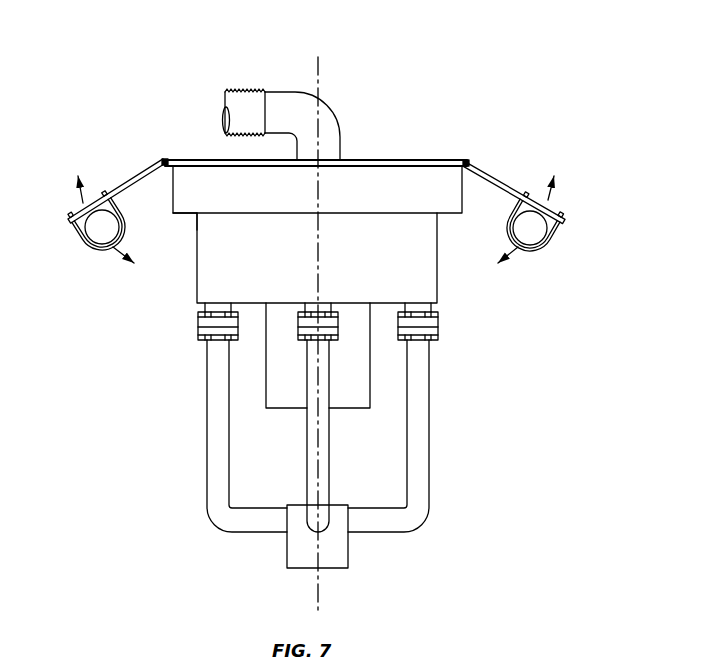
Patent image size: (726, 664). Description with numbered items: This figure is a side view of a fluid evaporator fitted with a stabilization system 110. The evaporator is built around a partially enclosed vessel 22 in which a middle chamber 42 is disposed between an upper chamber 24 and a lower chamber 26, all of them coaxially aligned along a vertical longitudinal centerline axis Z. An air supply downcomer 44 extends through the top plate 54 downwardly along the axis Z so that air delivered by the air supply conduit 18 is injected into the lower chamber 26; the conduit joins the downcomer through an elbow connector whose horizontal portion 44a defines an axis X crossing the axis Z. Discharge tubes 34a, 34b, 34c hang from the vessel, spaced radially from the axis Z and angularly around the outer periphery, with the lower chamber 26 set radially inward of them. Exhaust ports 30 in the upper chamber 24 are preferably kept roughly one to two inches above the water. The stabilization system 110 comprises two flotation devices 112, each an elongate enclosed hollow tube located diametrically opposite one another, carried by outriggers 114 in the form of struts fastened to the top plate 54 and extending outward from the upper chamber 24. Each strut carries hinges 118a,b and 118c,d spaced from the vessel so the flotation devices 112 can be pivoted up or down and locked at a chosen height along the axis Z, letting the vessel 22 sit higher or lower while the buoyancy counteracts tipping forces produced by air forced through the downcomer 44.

The longitudinal centerline axis Z is at (317, 67).
The air supply conduit 18 is at (224, 112).
The partially enclosed vessel 22 is at (442, 298).
The upper chamber 24 is at (375, 175).
The lower chamber 26 is at (371, 396).
The exhaust ports 30 is at (193, 213).
The discharge tube 34a is at (206, 476).
The discharge tube 34b is at (429, 476).
The discharge tube 34c is at (307, 476).
The middle chamber 42 is at (437, 280).
The air supply downcomer 44 is at (337, 142).
The horizontal portion of elbow connector 44a is at (272, 91).
The top plate 54 is at (413, 165).
The stabilization system 110 is at (549, 184).
The flotation device 112 is at (101, 237).
The outrigger 114 is at (507, 178).
The hinges 118a,b is at (165, 160).
The hinges 118c,d is at (468, 160).